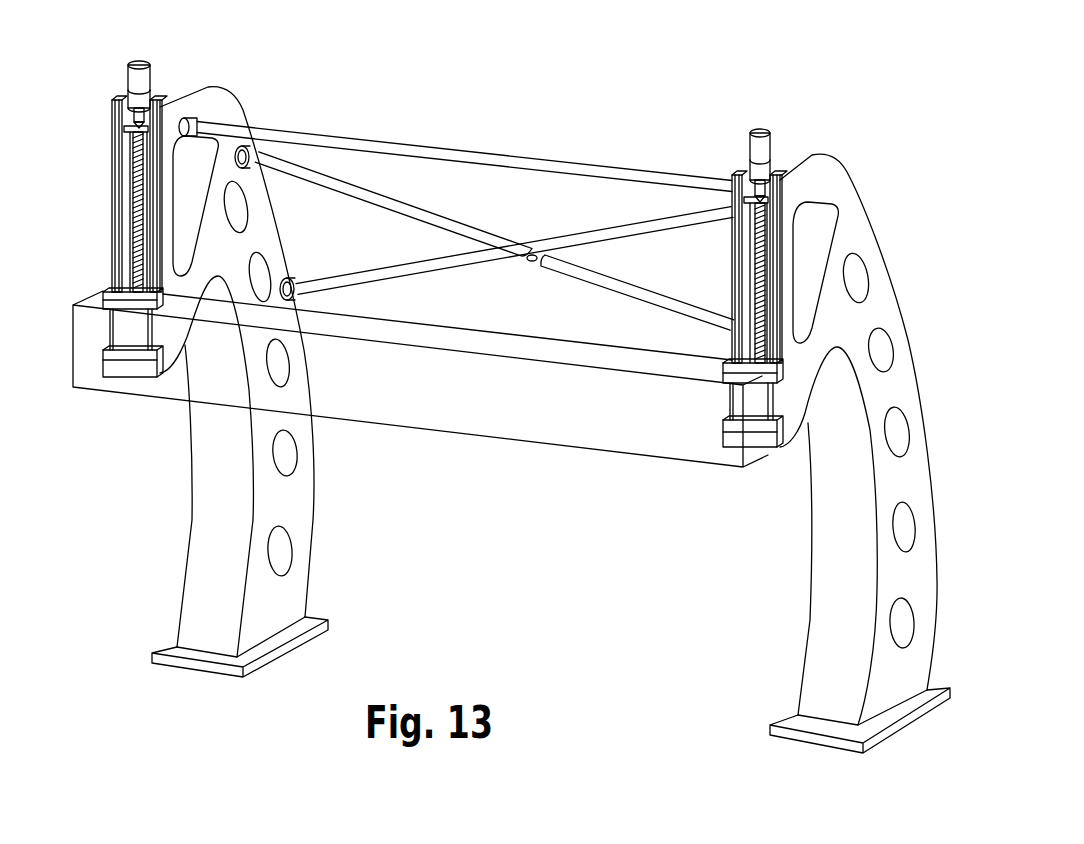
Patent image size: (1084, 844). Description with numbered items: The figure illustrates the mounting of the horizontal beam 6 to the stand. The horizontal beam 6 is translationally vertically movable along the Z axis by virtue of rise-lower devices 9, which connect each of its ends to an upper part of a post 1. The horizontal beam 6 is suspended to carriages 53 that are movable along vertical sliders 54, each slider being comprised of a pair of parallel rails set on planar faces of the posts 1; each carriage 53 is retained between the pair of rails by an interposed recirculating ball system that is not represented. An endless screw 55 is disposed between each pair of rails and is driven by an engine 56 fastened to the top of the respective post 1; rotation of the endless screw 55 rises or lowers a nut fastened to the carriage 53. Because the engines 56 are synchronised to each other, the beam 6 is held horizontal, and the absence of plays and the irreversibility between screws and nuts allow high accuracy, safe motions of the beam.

The post 1 is at (150, 577).
The horizontal beam 6 is at (573, 447).
The rise-lower device 9 is at (454, 262).
The carriage 53 is at (132, 370).
The vertical slider 54 is at (112, 226).
The endless screw 55 is at (133, 192).
The engine 56 is at (130, 77).